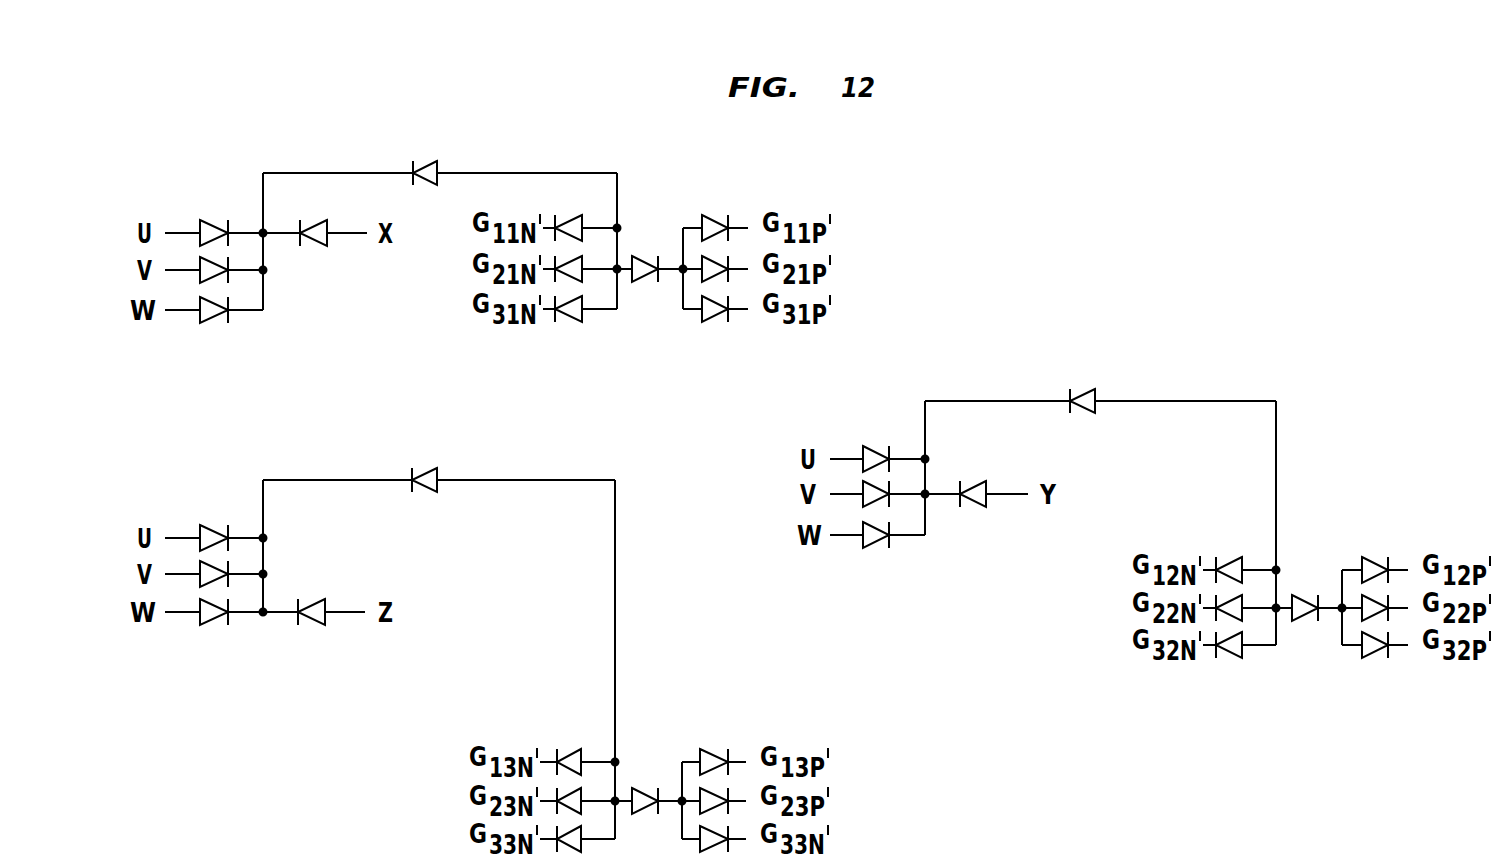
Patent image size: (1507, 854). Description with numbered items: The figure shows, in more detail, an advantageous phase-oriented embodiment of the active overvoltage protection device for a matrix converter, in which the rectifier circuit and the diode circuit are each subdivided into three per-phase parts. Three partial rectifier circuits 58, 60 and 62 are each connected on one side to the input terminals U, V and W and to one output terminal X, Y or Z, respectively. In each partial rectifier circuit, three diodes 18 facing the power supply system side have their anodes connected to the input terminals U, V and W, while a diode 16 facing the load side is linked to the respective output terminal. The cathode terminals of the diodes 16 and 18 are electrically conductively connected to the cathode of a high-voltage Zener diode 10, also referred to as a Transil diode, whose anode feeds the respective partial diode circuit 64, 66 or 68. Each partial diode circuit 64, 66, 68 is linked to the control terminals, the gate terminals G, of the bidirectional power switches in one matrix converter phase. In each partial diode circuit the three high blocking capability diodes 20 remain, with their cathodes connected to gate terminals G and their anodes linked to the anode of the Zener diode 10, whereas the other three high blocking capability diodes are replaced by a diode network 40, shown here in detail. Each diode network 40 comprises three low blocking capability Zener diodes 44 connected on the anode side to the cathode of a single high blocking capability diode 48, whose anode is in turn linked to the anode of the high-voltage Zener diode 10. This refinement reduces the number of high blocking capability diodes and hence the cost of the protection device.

The high-voltage Zener diode 10 is at (423, 166).
The diodes facing the load side 16 is at (642, 404).
The diodes facing the power supply system side 18 is at (545, 404).
The high blocking capability diodes 20 is at (898, 533).
The diode network 40 is at (672, 253).
The low blocking capability Zener diodes 44 is at (1044, 533).
The high blocking capability diode 48 is at (975, 555).
The partial rectifier circuit 58 is at (293, 318).
The partial rectifier circuit 60 is at (952, 556).
The partial rectifier circuit 62 is at (282, 660).
The partial diode circuit 64 is at (615, 241).
The partial diode circuit 66 is at (1277, 581).
The partial diode circuit 68 is at (616, 772).